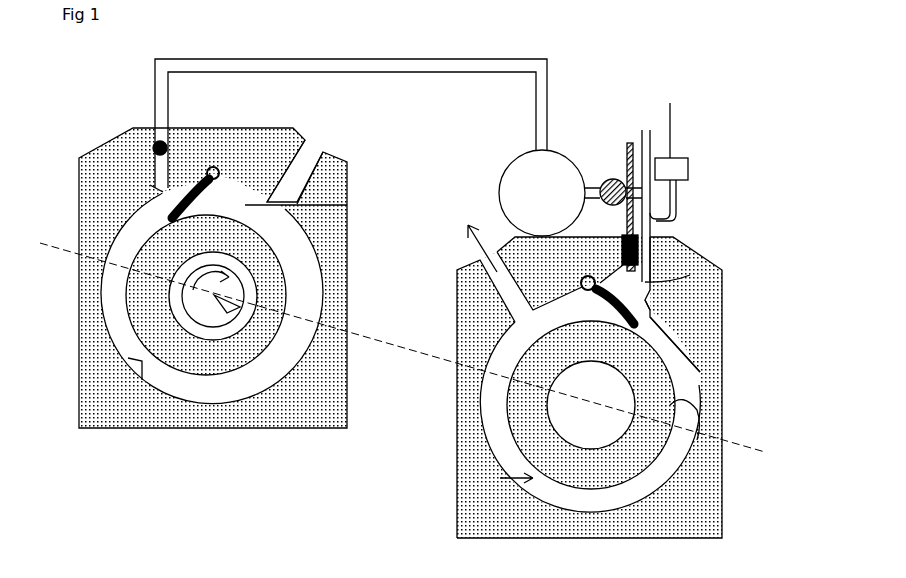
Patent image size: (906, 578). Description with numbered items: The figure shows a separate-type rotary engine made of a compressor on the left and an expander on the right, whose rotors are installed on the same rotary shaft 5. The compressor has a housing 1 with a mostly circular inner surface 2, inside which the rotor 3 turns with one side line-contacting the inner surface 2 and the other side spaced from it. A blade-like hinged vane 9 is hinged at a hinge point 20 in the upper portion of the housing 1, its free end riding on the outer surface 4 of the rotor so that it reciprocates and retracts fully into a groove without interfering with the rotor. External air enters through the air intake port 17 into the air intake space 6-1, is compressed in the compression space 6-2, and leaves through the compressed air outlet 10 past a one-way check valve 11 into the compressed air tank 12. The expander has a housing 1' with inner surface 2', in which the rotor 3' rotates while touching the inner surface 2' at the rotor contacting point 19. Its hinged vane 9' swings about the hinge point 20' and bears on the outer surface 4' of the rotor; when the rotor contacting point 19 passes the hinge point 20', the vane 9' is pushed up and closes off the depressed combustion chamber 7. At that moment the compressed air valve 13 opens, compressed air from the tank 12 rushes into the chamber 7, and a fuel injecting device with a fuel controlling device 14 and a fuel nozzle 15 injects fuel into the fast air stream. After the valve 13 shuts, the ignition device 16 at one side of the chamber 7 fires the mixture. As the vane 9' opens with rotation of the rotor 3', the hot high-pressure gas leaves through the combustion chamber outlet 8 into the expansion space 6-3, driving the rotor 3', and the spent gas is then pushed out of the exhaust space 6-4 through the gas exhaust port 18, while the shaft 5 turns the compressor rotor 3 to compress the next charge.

The housing 1 is at (213, 314).
The inner surface 2 is at (137, 425).
The rotor 3 is at (206, 343).
The outer surface of the rotor 4 is at (213, 362).
The rotary shaft 5 is at (220, 302).
The air intake space 6-1 is at (300, 204).
The compression space 6-2 is at (256, 385).
The expansion space 6-3 is at (657, 336).
The exhaust space 6-4 is at (492, 408).
The combustion chamber 7 is at (690, 275).
The combustion chamber outlet 8 is at (657, 317).
The hinged vane 9 is at (191, 150).
The hinged vane 9' is at (520, 341).
The compressed air outlet 10 is at (157, 187).
The one-way check valve 11 is at (153, 137).
The compressed air tank 12 is at (538, 193).
The compressed air valve 13 is at (607, 180).
The fuel controlling device 14 is at (669, 150).
The fuel nozzle 15 is at (642, 192).
The ignition device 16 is at (627, 198).
The air intake port 17 is at (313, 158).
The gas exhaust port 18 is at (472, 235).
The rotor contacting point 19 is at (687, 427).
The hinge point 20 is at (232, 131).
The hinge point 20' is at (480, 322).
The housing 1' is at (546, 387).
The inner surface 2' is at (460, 478).
The rotor 3' is at (541, 405).
The outer surface of the rotor 4' is at (527, 405).